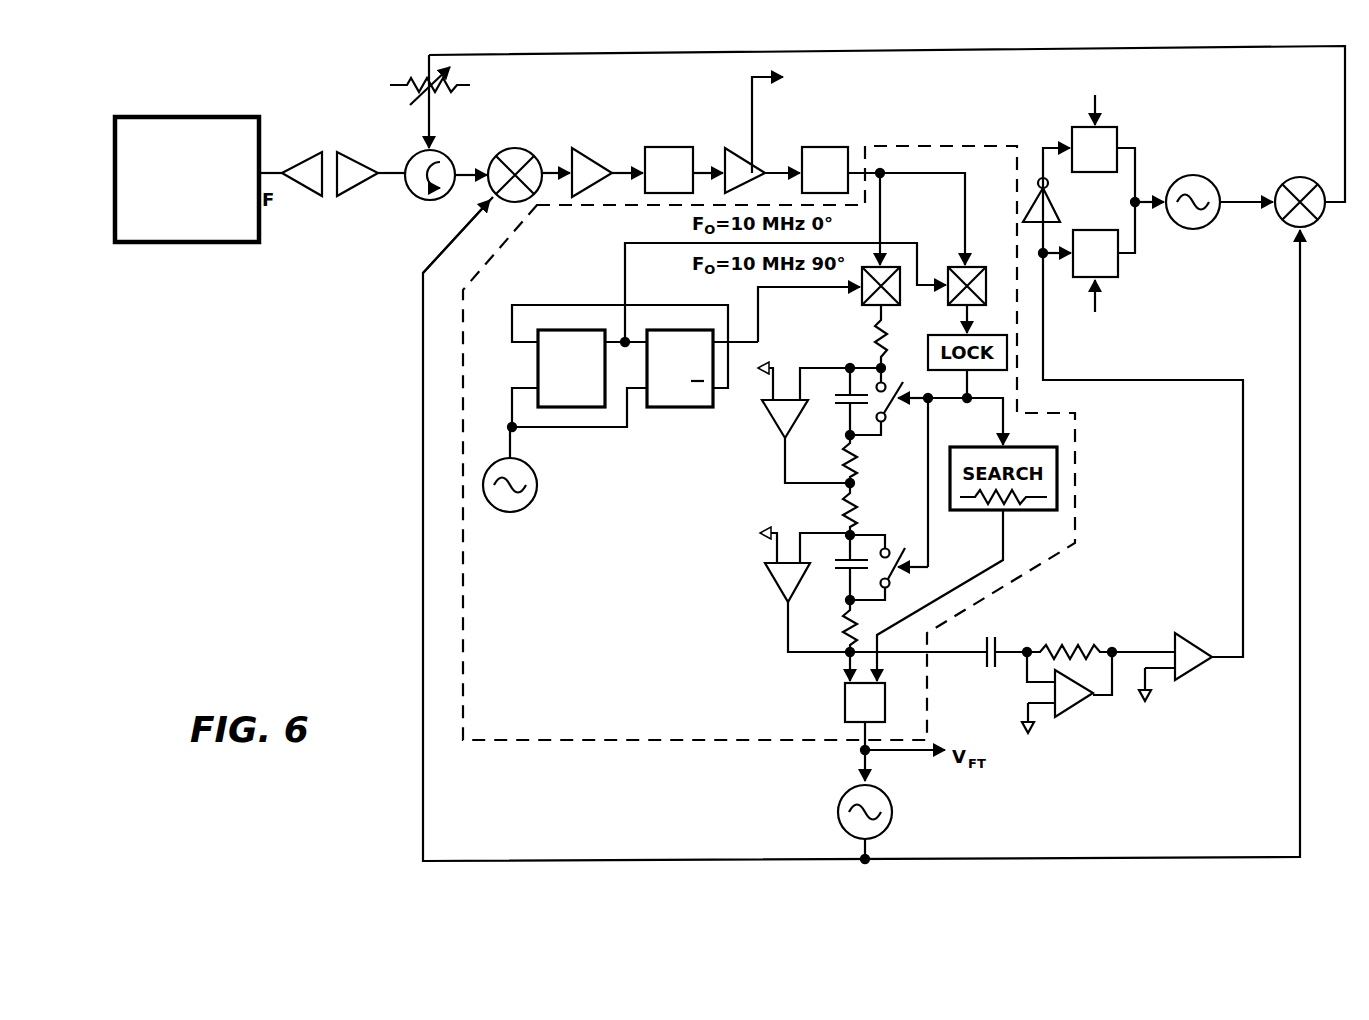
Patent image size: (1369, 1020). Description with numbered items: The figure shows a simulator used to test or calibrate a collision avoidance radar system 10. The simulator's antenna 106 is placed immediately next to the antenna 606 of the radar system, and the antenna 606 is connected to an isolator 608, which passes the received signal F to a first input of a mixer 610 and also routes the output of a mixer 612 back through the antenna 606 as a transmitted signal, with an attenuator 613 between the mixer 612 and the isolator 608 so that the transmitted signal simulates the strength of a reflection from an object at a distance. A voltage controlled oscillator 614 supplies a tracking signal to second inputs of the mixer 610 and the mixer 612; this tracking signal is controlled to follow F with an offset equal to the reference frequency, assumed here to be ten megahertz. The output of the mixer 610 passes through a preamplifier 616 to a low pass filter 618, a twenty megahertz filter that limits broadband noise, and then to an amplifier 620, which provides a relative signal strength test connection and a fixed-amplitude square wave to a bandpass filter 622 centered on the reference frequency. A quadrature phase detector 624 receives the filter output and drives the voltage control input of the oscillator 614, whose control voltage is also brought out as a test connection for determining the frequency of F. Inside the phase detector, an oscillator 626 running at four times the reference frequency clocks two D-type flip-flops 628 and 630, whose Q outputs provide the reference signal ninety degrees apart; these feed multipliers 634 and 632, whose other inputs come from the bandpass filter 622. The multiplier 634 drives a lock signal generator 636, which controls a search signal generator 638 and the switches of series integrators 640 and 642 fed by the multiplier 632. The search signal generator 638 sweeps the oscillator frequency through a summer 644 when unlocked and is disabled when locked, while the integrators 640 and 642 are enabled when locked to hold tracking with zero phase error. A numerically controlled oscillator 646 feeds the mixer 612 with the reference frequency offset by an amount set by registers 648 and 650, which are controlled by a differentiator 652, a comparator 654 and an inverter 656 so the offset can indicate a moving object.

The collision avoidance radar system 10 is at (177, 118).
The antenna 106 is at (300, 155).
The antenna 606 is at (357, 191).
The isolator 608 is at (410, 203).
The mixer 610 is at (495, 147).
The mixer 612 is at (1272, 217).
The attenuator 613 is at (458, 90).
The voltage controlled oscillator 614 is at (838, 810).
The preamplifier 616 is at (590, 150).
The low pass filter 618 is at (643, 190).
The amplifier 620 is at (737, 147).
The bandpass filter 622 is at (848, 150).
The phase detector 624 is at (587, 742).
The oscillator 626 is at (537, 480).
The D-type flip-flop 628 is at (538, 378).
The D-type flip-flop 630 is at (687, 407).
The multiplier 632 is at (873, 308).
The multiplier 634 is at (950, 267).
The lock signal generator 636 is at (925, 352).
The search signal generator 638 is at (982, 513).
The integrator 640 is at (772, 432).
The integrator 642 is at (768, 594).
The summer 644 is at (843, 708).
The numerically controlled oscillator 646 is at (1200, 177).
The register 648 is at (1117, 133).
The register 650 is at (1120, 267).
The differentiator 652 is at (1082, 718).
The comparator 654 is at (1190, 676).
The inverter 656 is at (1055, 198).